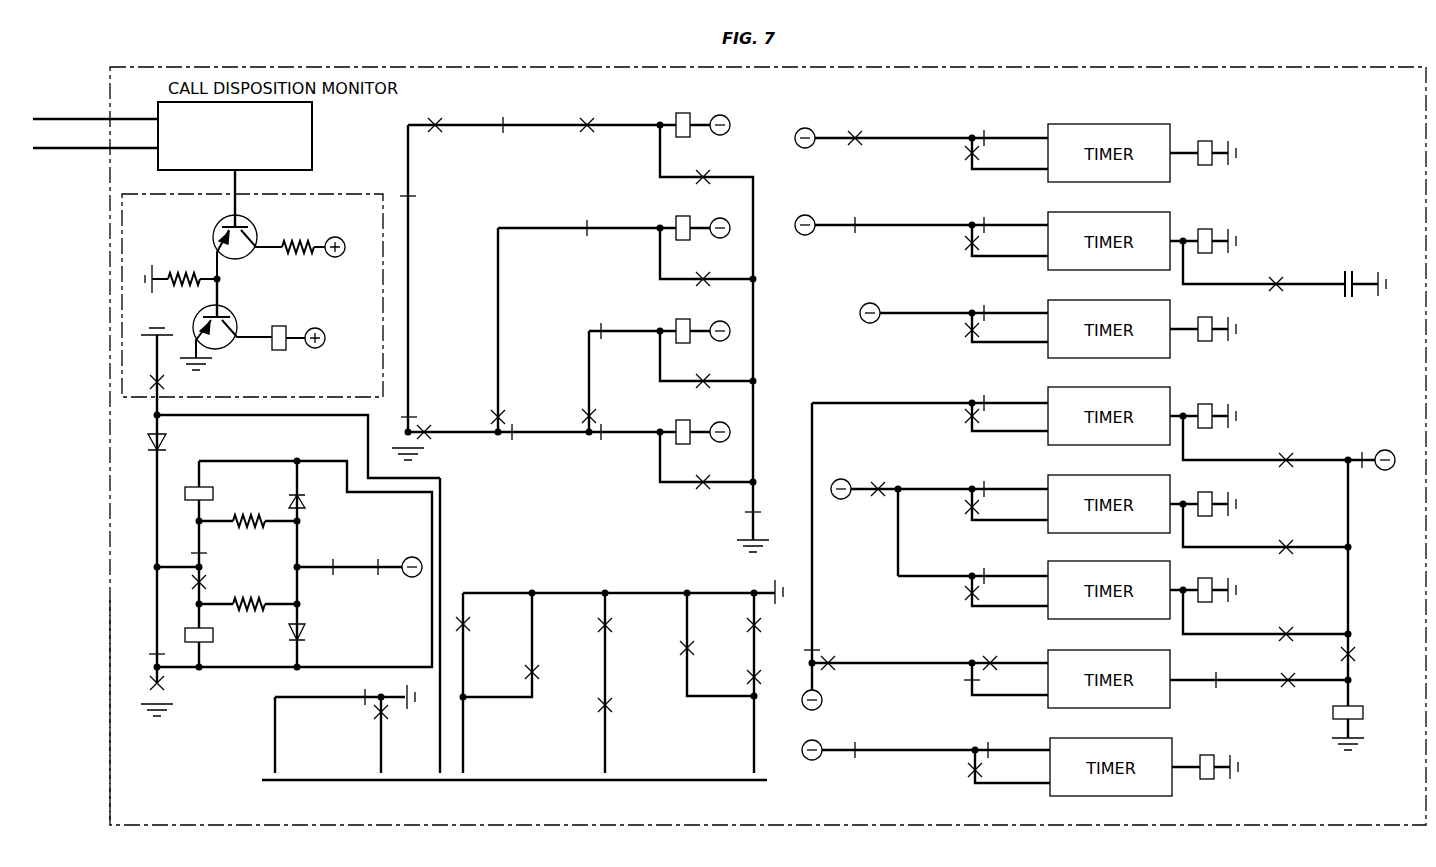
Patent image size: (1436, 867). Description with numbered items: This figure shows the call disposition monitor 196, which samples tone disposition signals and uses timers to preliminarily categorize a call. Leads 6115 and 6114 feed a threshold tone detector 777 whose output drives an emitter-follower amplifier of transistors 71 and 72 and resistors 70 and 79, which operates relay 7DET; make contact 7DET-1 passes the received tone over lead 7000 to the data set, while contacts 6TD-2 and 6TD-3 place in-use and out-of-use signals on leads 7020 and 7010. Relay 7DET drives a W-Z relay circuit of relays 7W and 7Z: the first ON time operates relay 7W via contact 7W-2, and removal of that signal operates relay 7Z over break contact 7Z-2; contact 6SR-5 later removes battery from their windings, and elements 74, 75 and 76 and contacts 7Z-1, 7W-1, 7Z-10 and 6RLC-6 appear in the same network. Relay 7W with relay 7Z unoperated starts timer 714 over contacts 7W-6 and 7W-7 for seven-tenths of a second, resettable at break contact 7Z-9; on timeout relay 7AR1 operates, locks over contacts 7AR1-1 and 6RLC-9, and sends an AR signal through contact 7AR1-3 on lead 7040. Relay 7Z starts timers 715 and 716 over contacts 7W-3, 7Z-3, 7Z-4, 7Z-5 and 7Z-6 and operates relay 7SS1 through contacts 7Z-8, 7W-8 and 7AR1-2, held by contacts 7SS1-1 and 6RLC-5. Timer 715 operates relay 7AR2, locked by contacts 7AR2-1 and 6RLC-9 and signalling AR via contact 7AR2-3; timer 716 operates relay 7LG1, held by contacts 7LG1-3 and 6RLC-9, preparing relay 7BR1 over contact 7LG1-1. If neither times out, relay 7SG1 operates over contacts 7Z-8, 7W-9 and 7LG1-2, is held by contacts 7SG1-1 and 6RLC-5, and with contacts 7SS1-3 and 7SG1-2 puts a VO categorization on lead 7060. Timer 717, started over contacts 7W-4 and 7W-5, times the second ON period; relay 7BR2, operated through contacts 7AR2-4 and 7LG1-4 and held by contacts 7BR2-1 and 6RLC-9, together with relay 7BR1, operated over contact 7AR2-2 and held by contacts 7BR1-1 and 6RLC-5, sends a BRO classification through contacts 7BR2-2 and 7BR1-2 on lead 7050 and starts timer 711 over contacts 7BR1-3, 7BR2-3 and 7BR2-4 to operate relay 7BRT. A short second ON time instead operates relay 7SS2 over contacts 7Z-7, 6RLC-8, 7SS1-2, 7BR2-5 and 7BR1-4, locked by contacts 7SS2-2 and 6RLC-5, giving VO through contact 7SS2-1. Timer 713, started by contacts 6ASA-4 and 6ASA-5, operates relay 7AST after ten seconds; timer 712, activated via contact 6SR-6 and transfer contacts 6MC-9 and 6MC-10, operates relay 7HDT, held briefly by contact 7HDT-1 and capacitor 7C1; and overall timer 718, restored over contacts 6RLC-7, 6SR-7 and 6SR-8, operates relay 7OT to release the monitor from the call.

The call disposition monitor 196 is at (110, 722).
The lead 6115 is at (95, 108).
The lead 6114 is at (95, 161).
The threshold tone detector 777 is at (313, 122).
The transistor 71 is at (216, 226).
The resistor 79 is at (313, 239).
The resistor 70 is at (181, 276).
The transistor 72 is at (229, 308).
The detector relay 7DET is at (293, 331).
The make contact 7DET-1 is at (186, 383).
The diode 76 is at (169, 441).
The relay 7Z is at (211, 494).
The diode 74 is at (308, 501).
The break contact 7Z-2 is at (217, 553).
The relay contact 7Z-1 is at (218, 583).
The contact 6SR-5 is at (349, 556).
The relay contact 6RLC-6 is at (383, 577).
The relay 7W is at (214, 636).
The diode 75 is at (308, 632).
The contact 7W-2 is at (138, 654).
The relay contact 7W-1 is at (179, 684).
The contact 6TD-3 is at (345, 689).
The contact 6TD-2 is at (354, 715).
The lead 7010 is at (264, 735).
The lead 7020 is at (371, 735).
The lead 7000 is at (429, 625).
The lead 7040 is at (452, 683).
The lead 7050 is at (595, 683).
The lead 7060 is at (744, 683).
The contact 7AR1-3 is at (493, 625).
The contact 7AR2-3 is at (561, 672).
The contact 7BR2-2 is at (634, 626).
The contact 7BR1-2 is at (634, 706).
The contact 7SS2-1 is at (716, 650).
The contact 7SG1-2 is at (784, 626).
The contact 7SS1-3 is at (783, 678).
The contact 7SS1-2 is at (434, 117).
The contact 7BR2-5 is at (501, 136).
The contact 7BR1-4 is at (587, 117).
The relay 7SS2 is at (695, 114).
The contact 6RLC-8 is at (436, 197).
The contact 7SS2-2 is at (702, 169).
The break contact 7AR1-2 is at (587, 217).
The relay 7SS1 is at (695, 216).
The contact 7SS1-1 is at (708, 270).
The contact 7AR2-2 is at (601, 321).
The relay 7BR1 is at (695, 320).
The contact 7BR1-1 is at (709, 372).
The contact 7Z-7 is at (429, 416).
The make contact 7Z-8 is at (444, 443).
The make contact 7W-8 is at (519, 416).
The contact 7W-9 is at (510, 442).
The contact 7LG1-1 is at (618, 416).
The contact 7LG1-2 is at (606, 442).
The relay 7SG1 is at (695, 421).
The contact 7SG1-1 is at (713, 473).
The contact 6RLC-5 is at (720, 514).
The contact 7BR1-3 is at (855, 129).
The contact 7BR2-3 is at (981, 129).
The contact 7BR2-4 is at (939, 155).
The timer 711 is at (1132, 124).
The relay 7BRT is at (1210, 142).
The contact 6SR-6 is at (851, 216).
The transfer contact 6MC-9 is at (979, 216).
The transfer contact 6MC-10 is at (938, 244).
The timer 712 is at (1132, 212).
The relay 7HDT is at (1209, 230).
The contact 7HDT-1 is at (1277, 274).
The capacitor 7C1 is at (1352, 274).
The contact 6ASA-4 is at (981, 304).
The contact 6ASA-5 is at (938, 332).
The timer 713 is at (1132, 300).
The relay 7AST is at (1210, 318).
The contact 7W-6 is at (978, 394).
The contact 7W-7 is at (948, 418).
The timer 714 is at (1132, 387).
The relay 7AR1 is at (1211, 405).
The contact 7AR1-1 is at (1289, 451).
The contact 6RLC-9 is at (1363, 451).
The contact 7W-3 is at (875, 480).
The contact 7Z-5 is at (982, 480).
The contact 7Z-6 is at (950, 508).
The timer 715 is at (1132, 475).
The relay 7AR2 is at (1211, 493).
The contact 7AR2-1 is at (1287, 538).
The contact 7Z-3 is at (984, 567).
The contact 7Z-4 is at (950, 595).
The timer 716 is at (1132, 561).
The relay 7LG1 is at (1211, 579).
The contact 7LG1-3 is at (1289, 625).
The break contact 7Z-9 is at (831, 650).
The relay contact 7Z-10 is at (845, 673).
The contact 7W-4 is at (988, 653).
The contact 7W-5 is at (949, 682).
The timer 717 is at (1132, 650).
The contact 7AR2-4 is at (1215, 670).
The contact 7LG1-4 is at (1291, 670).
The contact 7BR2-1 is at (1378, 656).
The relay 7BR2 is at (1371, 714).
The contact 6RLC-7 is at (854, 741).
The contact 6SR-7 is at (985, 741).
The contact 6SR-8 is at (947, 772).
The overall timer 718 is at (1134, 738).
The relay 7OT is at (1214, 756).